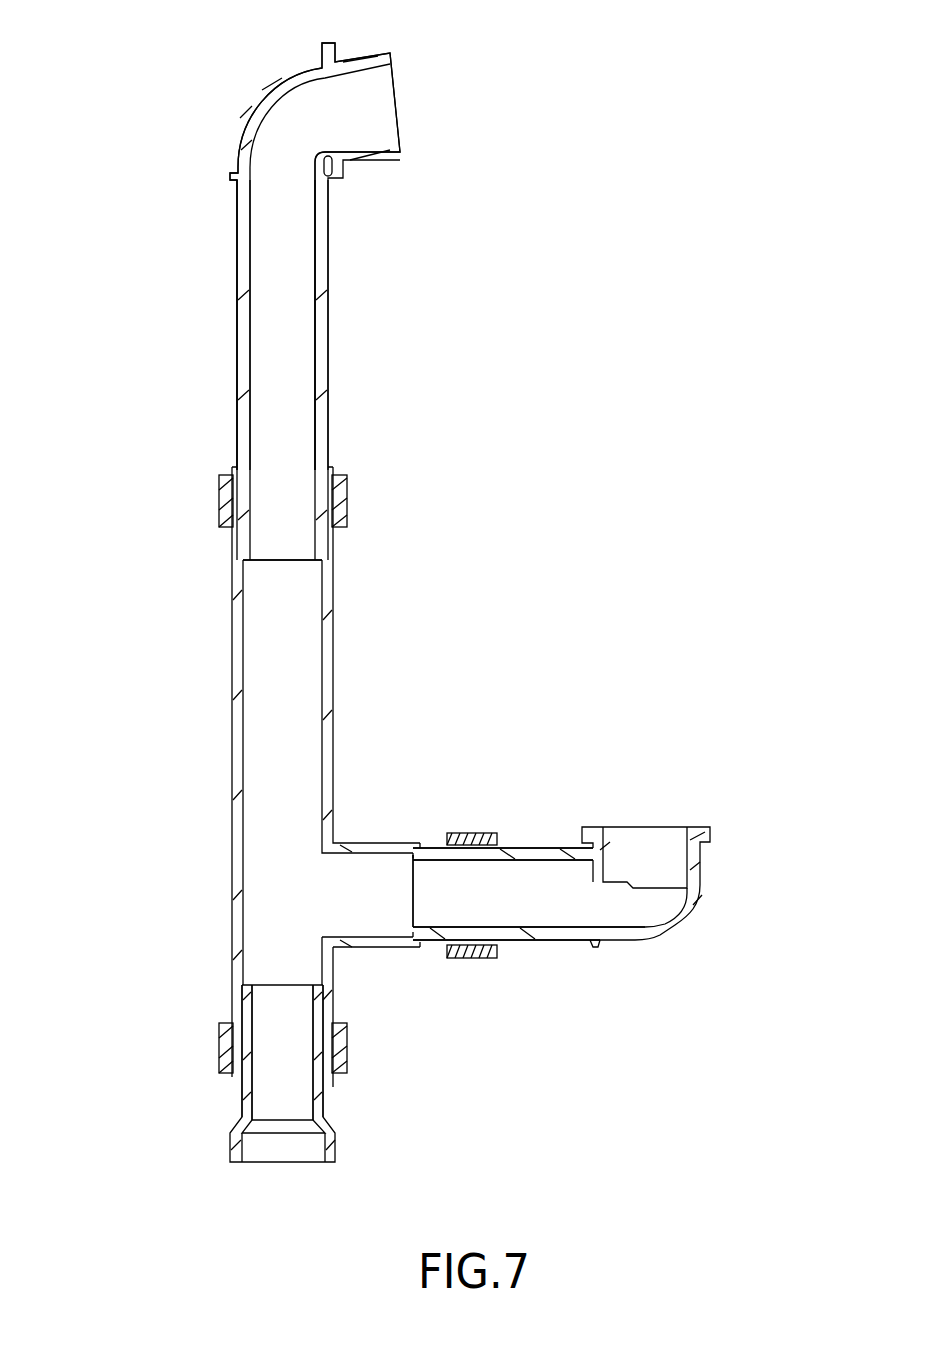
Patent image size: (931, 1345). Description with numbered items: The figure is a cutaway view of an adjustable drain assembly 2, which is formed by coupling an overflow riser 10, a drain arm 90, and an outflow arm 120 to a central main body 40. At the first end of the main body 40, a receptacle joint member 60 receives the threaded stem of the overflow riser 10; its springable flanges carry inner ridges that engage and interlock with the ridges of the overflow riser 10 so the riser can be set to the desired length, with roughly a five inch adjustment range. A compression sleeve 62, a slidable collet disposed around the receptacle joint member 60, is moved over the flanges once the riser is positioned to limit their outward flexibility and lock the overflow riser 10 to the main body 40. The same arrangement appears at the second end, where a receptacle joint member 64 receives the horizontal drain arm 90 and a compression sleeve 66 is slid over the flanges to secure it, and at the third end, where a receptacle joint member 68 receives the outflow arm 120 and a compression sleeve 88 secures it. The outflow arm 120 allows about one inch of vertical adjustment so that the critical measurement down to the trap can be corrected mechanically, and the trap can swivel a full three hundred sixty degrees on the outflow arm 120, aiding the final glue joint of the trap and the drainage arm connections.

The adjustable drain assembly 2 is at (675, 52).
The overflow riser 10 is at (412, 205).
The receptacle joint member 60 is at (164, 440).
The compression sleeve 62 is at (345, 485).
The main body 40 is at (181, 715).
The receptacle joint member 64 is at (473, 790).
The compression sleeve 66 is at (483, 832).
The drain arm 90 is at (613, 979).
The receptacle joint member 68 is at (364, 1018).
The compression sleeve 88 is at (343, 1055).
The outflow arm 120 is at (366, 1144).